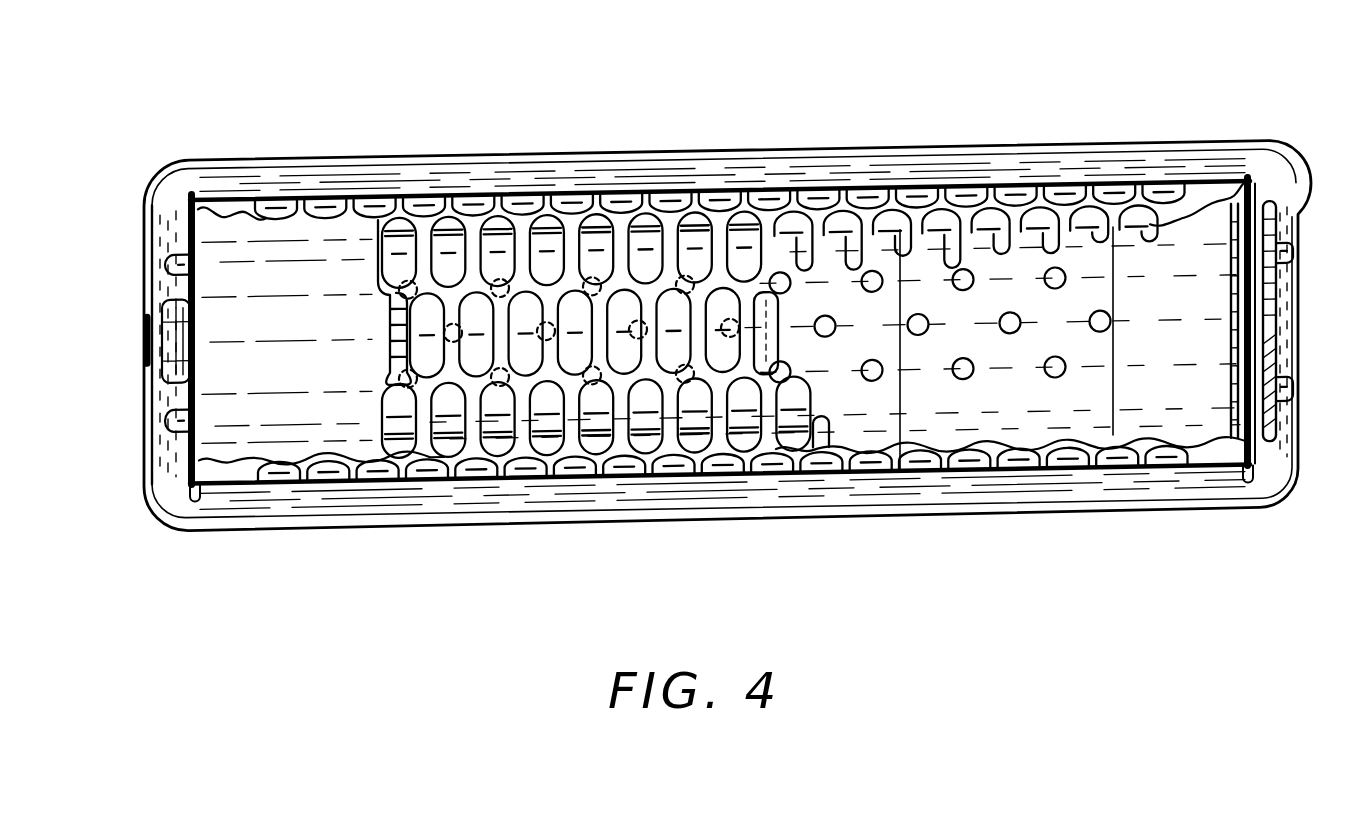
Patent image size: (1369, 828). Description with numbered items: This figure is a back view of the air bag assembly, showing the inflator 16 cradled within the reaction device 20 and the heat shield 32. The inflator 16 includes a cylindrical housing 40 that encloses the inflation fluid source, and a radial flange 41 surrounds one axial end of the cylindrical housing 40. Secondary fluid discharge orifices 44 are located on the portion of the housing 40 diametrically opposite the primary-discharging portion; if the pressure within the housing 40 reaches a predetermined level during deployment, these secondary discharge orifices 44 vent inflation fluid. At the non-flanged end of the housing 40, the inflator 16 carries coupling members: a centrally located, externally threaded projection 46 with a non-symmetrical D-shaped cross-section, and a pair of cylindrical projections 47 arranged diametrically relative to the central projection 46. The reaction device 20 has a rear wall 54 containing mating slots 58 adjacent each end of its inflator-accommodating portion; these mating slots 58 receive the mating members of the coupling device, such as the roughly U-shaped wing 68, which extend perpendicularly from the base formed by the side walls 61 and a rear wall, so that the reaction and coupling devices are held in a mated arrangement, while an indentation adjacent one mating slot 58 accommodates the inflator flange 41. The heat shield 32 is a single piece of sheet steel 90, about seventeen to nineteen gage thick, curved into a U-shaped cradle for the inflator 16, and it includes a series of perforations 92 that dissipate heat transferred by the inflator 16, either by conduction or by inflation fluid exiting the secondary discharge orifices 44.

The inflator 16 is at (330, 286).
The reaction device 20 is at (866, 157).
The heat shield 32 is at (594, 200).
The cylindrical housing 40 is at (267, 282).
The radial flange 41 is at (1297, 243).
The secondary fluid discharge orifices 44 is at (965, 303).
The projection 46 is at (143, 350).
The projections 47 is at (165, 265).
The rear wall 54 is at (1067, 186).
The mating slots 58 is at (188, 200).
The side walls 61 is at (1276, 366).
The wing 68 is at (145, 218).
The sheet steel 90 is at (680, 200).
The perforations 92 is at (483, 416).